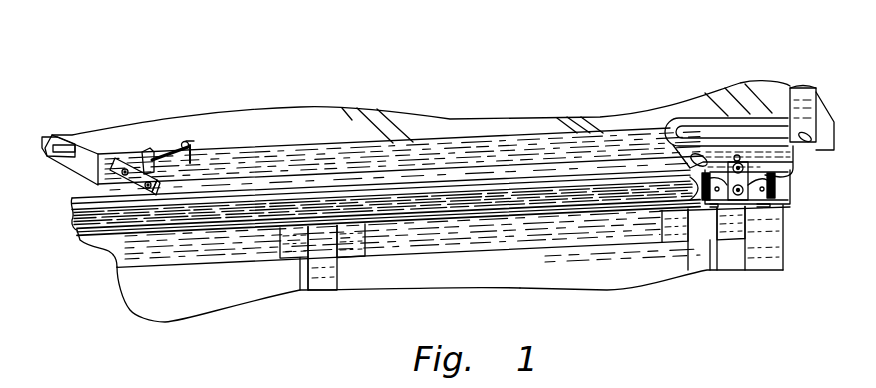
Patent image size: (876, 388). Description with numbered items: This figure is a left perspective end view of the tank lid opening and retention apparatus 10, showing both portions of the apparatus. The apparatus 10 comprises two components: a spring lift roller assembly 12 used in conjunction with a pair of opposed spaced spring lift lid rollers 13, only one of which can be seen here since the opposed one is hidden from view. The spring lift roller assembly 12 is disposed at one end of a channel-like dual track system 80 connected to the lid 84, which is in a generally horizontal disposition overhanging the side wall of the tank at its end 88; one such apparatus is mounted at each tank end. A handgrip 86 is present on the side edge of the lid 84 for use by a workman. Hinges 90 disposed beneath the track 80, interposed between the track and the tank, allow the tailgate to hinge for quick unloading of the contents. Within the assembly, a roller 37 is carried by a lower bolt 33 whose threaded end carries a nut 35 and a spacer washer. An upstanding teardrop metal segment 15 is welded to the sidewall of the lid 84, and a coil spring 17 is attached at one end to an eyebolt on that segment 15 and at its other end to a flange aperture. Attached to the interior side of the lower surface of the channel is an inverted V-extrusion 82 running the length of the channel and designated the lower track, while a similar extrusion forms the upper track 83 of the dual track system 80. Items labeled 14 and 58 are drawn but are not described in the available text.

The apparatus 10 is at (594, 306).
The spring lift roller assembly 12 is at (752, 90).
The spring lift lid roller 13 is at (160, 140).
The mounting bracket 14 is at (143, 153).
The teardrop metal segment 15 is at (192, 148).
The coil spring 17 is at (175, 143).
The lower bolt 33 is at (157, 193).
The nut 35 is at (195, 203).
The roller 37 is at (145, 193).
The clamp mechanism 58 is at (777, 174).
The dual track system 80 is at (53, 244).
The inverted V-extrusion 82 is at (93, 222).
The upper track 83 is at (87, 207).
The lid 84 is at (323, 147).
The handgrip 86 is at (42, 137).
The end 88 is at (375, 304).
The hinges 90 is at (277, 223).